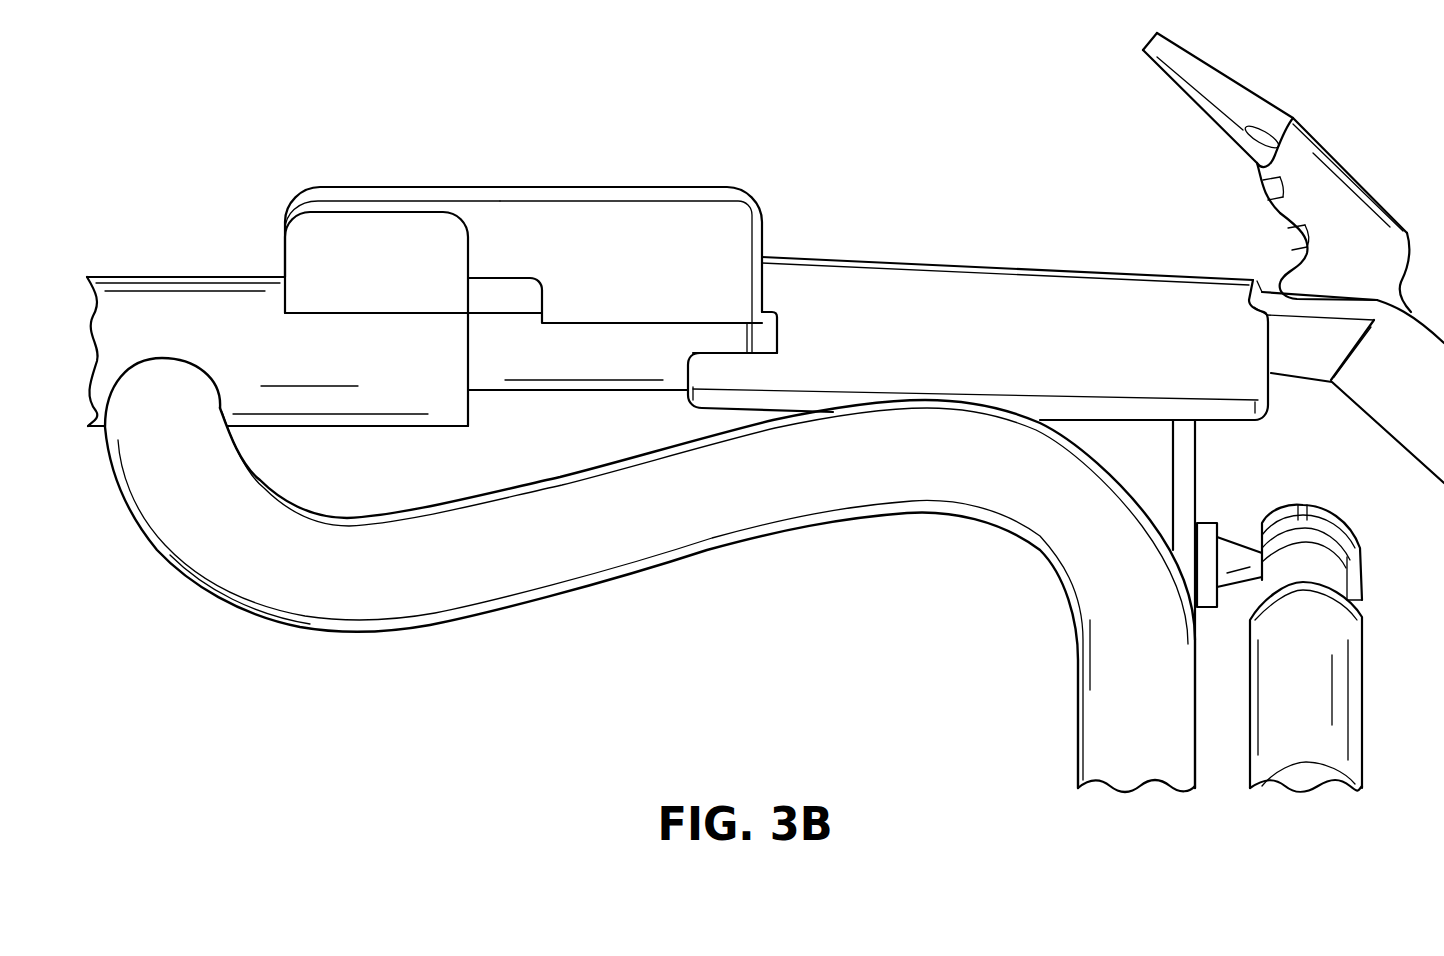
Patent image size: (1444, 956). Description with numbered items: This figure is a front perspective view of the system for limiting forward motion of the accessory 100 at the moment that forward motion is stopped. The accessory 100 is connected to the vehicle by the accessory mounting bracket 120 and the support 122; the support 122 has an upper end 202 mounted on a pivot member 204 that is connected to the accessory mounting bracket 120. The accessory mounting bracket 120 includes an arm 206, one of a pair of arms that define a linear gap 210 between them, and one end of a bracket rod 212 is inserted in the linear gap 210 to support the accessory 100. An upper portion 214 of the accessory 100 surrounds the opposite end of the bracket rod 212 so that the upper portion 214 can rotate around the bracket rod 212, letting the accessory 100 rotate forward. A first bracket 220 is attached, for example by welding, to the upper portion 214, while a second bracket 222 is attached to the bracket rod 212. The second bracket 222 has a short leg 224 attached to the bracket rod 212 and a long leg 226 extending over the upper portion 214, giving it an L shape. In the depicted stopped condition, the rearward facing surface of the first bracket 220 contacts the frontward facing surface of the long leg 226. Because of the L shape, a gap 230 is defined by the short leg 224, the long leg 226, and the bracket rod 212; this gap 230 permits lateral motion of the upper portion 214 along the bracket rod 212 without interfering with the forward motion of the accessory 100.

The accessory 100 is at (562, 604).
The accessory mounting bracket 120 is at (953, 259).
The support 122 is at (1365, 694).
The upper end 202 is at (1345, 515).
The pivot member 204 is at (1240, 543).
The arm 206 is at (687, 378).
The linear gap 210 is at (780, 333).
The bracket rod 212 is at (582, 365).
The upper portion 214 is at (128, 276).
The first bracket 220 is at (283, 242).
The second bracket 222 is at (508, 190).
The short leg 224 is at (660, 196).
The long leg 226 is at (343, 196).
The gap 230 is at (493, 293).